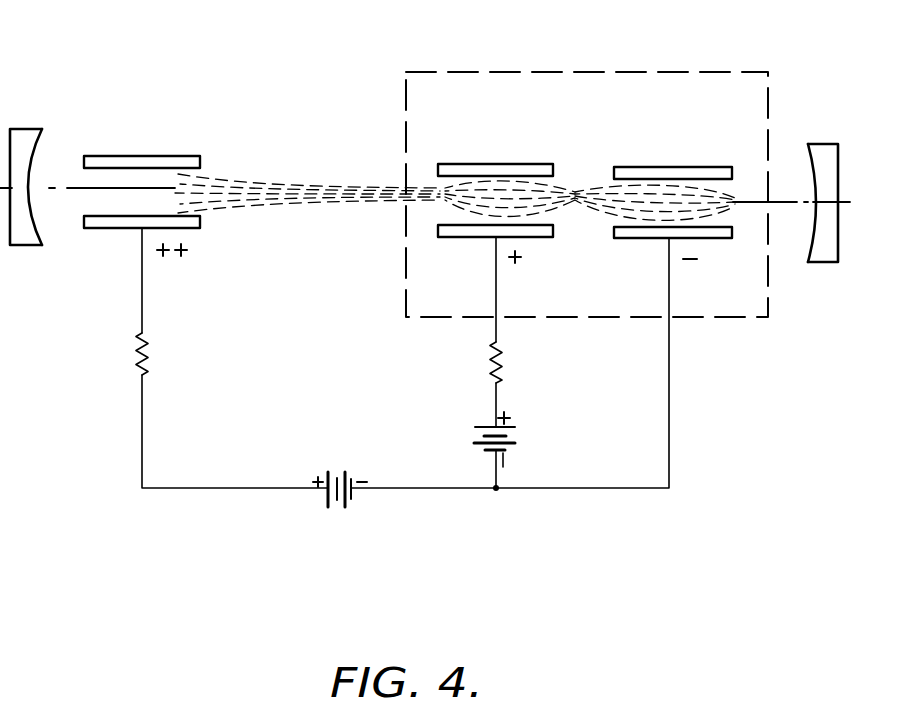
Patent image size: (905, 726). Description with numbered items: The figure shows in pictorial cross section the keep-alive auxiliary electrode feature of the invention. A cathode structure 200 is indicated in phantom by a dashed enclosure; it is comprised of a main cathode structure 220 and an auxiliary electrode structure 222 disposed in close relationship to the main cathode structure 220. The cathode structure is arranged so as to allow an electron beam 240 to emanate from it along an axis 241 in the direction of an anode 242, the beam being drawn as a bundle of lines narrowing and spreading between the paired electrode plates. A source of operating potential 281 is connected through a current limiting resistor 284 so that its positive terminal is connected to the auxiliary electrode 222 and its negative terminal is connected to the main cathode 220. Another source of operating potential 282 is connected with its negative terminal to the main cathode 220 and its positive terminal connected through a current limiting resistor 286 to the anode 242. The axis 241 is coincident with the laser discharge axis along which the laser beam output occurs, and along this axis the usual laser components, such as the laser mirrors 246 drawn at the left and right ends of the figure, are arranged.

The cathode structure 200 is at (521, 72).
The main cathode structure 220 is at (731, 165).
The auxiliary electrode structure 222 is at (497, 163).
The electron beam 240 is at (377, 196).
The axis 241 is at (752, 204).
The anode 242 is at (192, 157).
The laser mirrors 246 is at (30, 132).
The source of operating potential 281 is at (515, 434).
The source of operating potential 282 is at (338, 472).
The current limiting resistor 284 is at (502, 352).
The current limiting resistor 286 is at (148, 342).